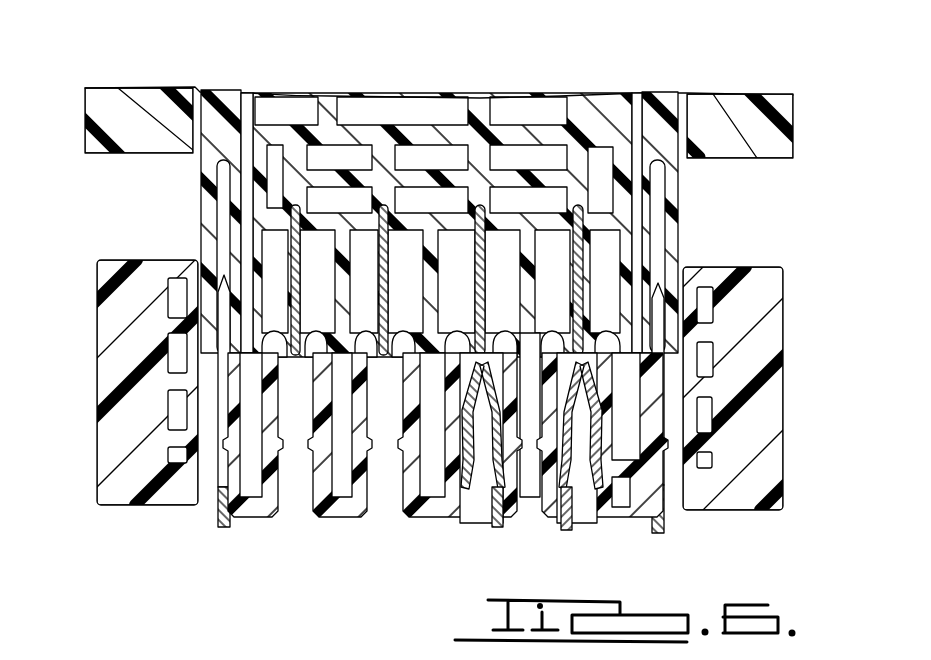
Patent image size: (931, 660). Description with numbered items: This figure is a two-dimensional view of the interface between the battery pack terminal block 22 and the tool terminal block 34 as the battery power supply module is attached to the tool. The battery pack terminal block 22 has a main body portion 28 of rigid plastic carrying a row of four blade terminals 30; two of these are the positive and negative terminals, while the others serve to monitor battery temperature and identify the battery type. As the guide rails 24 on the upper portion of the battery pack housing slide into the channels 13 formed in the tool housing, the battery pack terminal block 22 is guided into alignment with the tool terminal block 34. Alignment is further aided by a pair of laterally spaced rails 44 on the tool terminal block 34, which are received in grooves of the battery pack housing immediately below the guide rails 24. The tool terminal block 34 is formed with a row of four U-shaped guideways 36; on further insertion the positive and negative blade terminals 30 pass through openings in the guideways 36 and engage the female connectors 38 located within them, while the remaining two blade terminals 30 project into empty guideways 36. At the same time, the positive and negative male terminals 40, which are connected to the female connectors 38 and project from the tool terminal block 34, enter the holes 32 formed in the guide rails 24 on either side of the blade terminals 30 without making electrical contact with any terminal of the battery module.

The channels 13 is at (112, 107).
The battery pack terminal block 22 is at (489, 85).
The guide rails 24 is at (215, 147).
The main body portion 28 is at (252, 100).
The blade terminals 30 is at (379, 278).
The holes 32 is at (220, 263).
The tool terminal block 34 is at (421, 534).
The U-shaped guideways 36 is at (290, 367).
The female connectors 38 is at (463, 380).
The male terminals 40 is at (220, 365).
The rails 44 is at (127, 308).